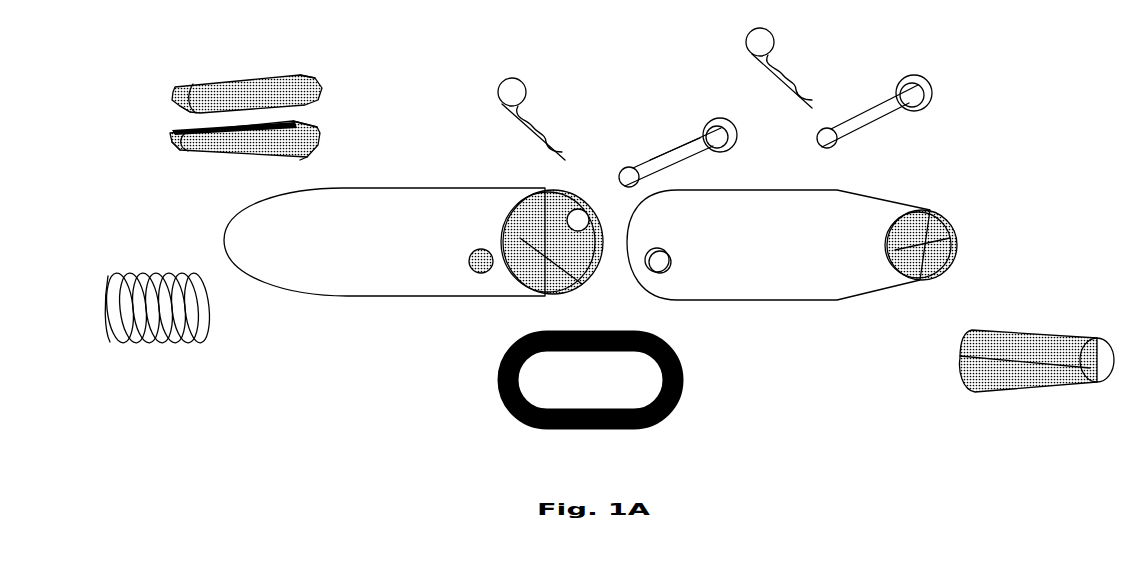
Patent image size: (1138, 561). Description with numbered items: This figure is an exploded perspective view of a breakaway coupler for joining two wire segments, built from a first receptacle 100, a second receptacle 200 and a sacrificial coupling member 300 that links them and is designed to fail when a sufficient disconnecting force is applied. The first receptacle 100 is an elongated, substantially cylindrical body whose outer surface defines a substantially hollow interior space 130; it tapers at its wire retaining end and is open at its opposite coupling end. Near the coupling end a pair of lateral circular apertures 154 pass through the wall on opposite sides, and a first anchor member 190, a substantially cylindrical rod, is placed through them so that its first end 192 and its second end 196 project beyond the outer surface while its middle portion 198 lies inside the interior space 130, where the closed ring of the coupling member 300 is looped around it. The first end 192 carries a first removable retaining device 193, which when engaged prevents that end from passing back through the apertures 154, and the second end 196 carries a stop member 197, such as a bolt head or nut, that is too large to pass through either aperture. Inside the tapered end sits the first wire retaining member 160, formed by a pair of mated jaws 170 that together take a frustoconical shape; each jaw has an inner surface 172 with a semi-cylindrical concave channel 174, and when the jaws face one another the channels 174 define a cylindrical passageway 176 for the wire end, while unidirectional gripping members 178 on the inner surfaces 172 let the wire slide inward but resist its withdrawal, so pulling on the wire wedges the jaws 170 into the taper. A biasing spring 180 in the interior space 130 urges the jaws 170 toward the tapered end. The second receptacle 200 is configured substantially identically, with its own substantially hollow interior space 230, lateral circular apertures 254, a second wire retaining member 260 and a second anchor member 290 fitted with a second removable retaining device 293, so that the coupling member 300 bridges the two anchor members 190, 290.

The first receptacle 100 is at (353, 297).
The substantially hollow interior space 130 is at (580, 270).
The lateral circular apertures 154 is at (470, 273).
The first wire retaining member 160 is at (310, 153).
The mated jaws 170 is at (235, 80).
The inner surface 172 is at (310, 117).
The semi-cylindrical concave channel 174 is at (190, 103).
The cylindrical passageway 176 is at (215, 118).
The unidirectional gripping members 178 is at (172, 143).
The biasing spring 180 is at (145, 348).
The first anchor member 190 is at (660, 145).
The first end 192 is at (630, 167).
The first removable retaining device 193 is at (490, 86).
The second end 196 is at (720, 150).
The stop member 197 is at (720, 118).
The middle portion 198 is at (672, 143).
The second receptacle 200 is at (745, 300).
The substantially hollow interior space 230 is at (950, 232).
The lateral circular apertures 254 is at (662, 270).
The second wire retaining member 260 is at (1045, 331).
The second anchor member 290 is at (893, 117).
The second removable retaining device 293 is at (790, 70).
The coupling member 300 is at (503, 400).